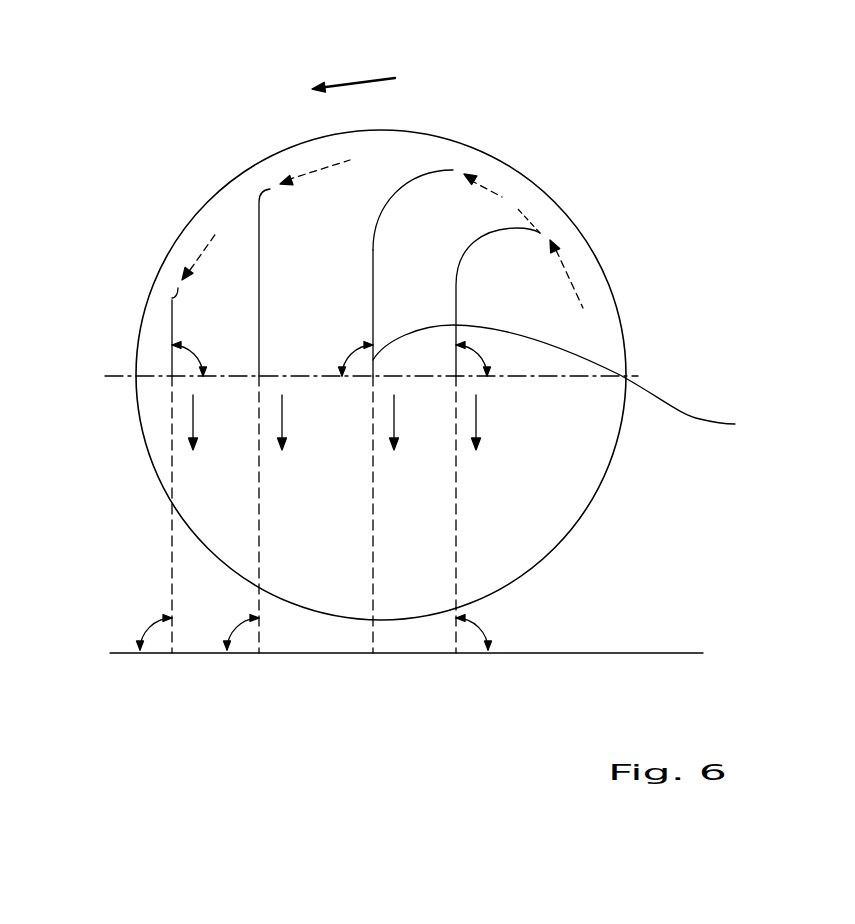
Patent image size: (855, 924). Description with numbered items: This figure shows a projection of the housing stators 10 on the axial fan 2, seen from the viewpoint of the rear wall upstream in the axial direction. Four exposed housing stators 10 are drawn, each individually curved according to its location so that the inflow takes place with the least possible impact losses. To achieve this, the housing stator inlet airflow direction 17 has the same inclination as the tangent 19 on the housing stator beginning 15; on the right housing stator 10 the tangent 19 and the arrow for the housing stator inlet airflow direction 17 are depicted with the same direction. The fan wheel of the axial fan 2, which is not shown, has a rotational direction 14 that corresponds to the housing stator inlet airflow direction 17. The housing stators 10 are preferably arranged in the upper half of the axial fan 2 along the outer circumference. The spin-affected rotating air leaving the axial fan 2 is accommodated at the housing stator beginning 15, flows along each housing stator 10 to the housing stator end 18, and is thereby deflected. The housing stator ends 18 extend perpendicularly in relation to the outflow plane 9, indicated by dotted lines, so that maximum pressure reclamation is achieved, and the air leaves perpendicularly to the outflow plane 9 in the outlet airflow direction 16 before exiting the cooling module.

The axial fan 2 is at (497, 163).
The outflow plane 9 is at (522, 653).
The housing stators 10 is at (176, 298).
The rotational direction 14 is at (360, 79).
The housing stator beginning 15 is at (442, 168).
The outlet airflow direction 16 is at (197, 420).
The housing stator inlet airflow direction 17 is at (206, 246).
The housing stator end 18 is at (566, 381).
The tangent 19 is at (528, 218).